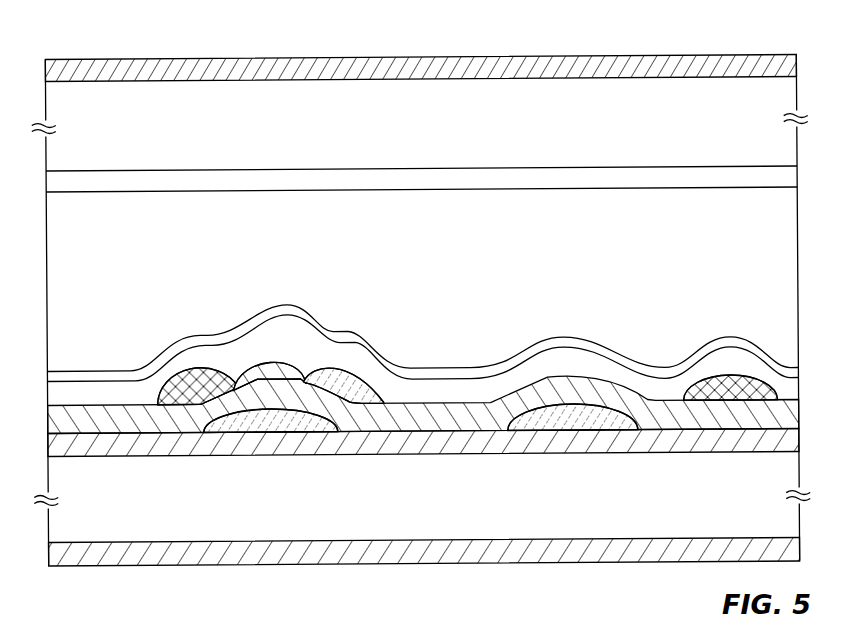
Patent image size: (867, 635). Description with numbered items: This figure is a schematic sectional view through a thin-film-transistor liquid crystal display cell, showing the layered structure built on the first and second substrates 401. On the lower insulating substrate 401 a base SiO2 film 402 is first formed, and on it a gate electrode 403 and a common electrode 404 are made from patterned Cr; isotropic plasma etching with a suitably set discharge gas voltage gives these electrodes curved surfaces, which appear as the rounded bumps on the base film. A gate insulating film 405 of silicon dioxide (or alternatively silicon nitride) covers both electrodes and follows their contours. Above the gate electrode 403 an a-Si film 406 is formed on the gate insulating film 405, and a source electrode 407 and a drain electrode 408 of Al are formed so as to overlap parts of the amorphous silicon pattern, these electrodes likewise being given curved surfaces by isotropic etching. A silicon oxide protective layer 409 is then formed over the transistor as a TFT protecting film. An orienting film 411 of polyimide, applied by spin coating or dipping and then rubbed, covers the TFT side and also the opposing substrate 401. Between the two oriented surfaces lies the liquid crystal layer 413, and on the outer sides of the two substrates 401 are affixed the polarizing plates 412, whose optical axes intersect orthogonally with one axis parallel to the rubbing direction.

The first and second substrates 401 is at (449, 136).
The base SiO2 film 402 is at (412, 440).
The gate electrode 403 is at (270, 422).
The common electrode 404 is at (578, 422).
The gate insulating film 405 is at (620, 390).
The a-Si 406 is at (270, 355).
The source electrode 407 is at (210, 370).
The drain electrode 408 is at (327, 368).
The protective layer 409 is at (658, 393).
The orienting film 411 is at (57, 168).
The polarizing plate 412 is at (367, 56).
The liquid crystal layer 413 is at (450, 254).